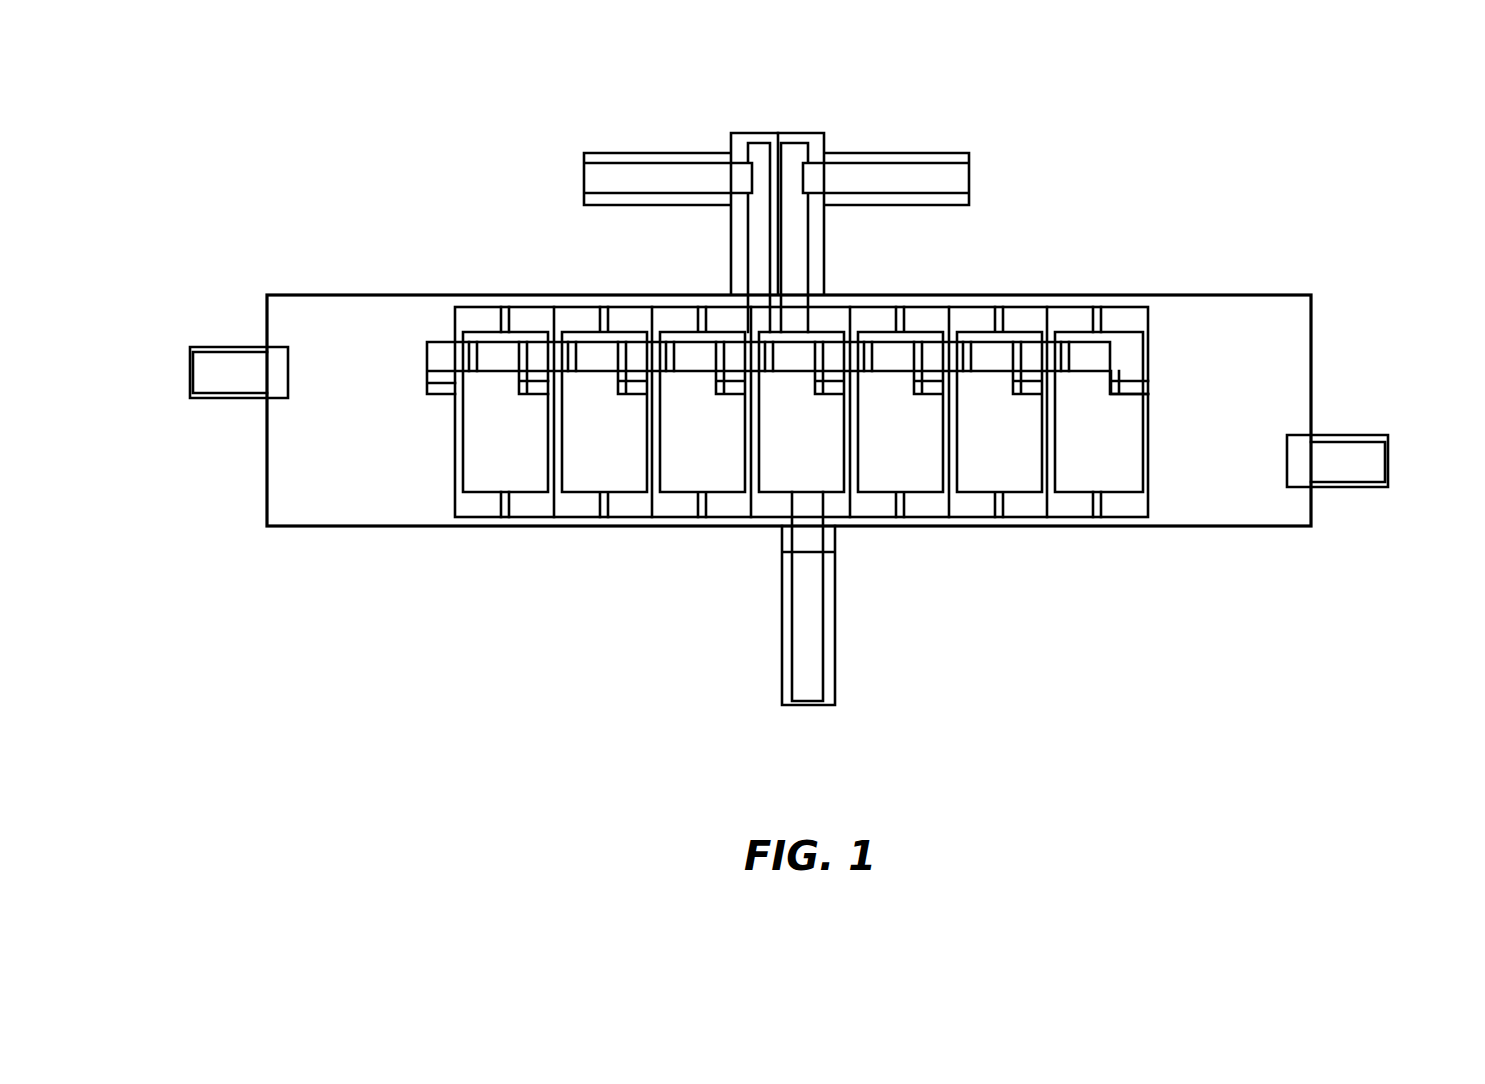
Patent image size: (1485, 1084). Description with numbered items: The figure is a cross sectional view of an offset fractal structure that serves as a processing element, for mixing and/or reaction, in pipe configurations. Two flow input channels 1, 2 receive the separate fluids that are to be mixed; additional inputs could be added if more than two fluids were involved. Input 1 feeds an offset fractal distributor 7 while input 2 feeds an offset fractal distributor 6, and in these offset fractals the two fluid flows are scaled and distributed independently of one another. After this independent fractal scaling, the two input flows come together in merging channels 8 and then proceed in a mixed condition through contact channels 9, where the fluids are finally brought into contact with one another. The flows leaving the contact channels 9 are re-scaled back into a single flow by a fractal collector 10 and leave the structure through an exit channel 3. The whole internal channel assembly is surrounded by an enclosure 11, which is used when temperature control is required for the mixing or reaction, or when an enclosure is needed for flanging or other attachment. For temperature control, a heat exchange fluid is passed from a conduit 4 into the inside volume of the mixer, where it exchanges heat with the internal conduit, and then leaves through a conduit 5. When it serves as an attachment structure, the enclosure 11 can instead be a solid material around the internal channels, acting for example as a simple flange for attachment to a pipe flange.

The flow input channel 1 is at (640, 153).
The flow input channel 2 is at (912, 153).
The exit channel 3 is at (782, 650).
The conduit 4 is at (1367, 487).
The conduit 5 is at (210, 398).
The offset fractal distributor 6 is at (1150, 317).
The offset fractal distributor 7 is at (1150, 355).
The merging channel 8 is at (1130, 393).
The contact channel 9 is at (1150, 450).
The fractal collector 10 is at (452, 505).
The enclosure 11 is at (328, 295).